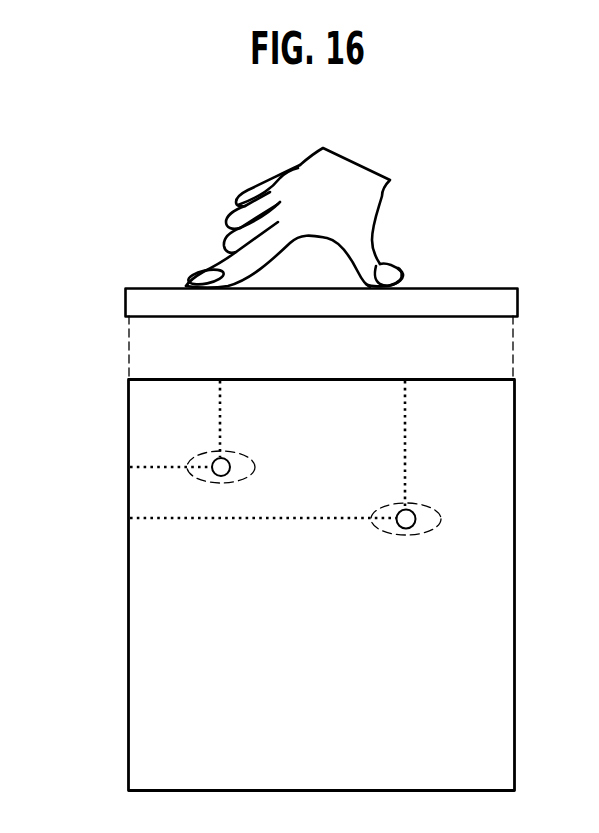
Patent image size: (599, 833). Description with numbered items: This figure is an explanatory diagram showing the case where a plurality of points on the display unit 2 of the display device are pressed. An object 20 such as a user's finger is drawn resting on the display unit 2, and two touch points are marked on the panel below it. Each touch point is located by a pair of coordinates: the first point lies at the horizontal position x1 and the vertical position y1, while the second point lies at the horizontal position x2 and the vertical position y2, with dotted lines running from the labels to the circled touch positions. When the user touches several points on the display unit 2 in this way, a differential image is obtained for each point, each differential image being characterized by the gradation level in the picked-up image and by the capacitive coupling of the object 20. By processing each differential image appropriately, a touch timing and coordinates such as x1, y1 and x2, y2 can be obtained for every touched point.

The display unit 2 is at (128, 633).
The object 20 is at (226, 250).
The x-coordinate of first touch position x1 is at (221, 401).
The x-coordinate of second touch position x2 is at (404, 427).
The y-coordinate of first touch position y1 is at (154, 465).
The y-coordinate of second touch position y2 is at (247, 517).